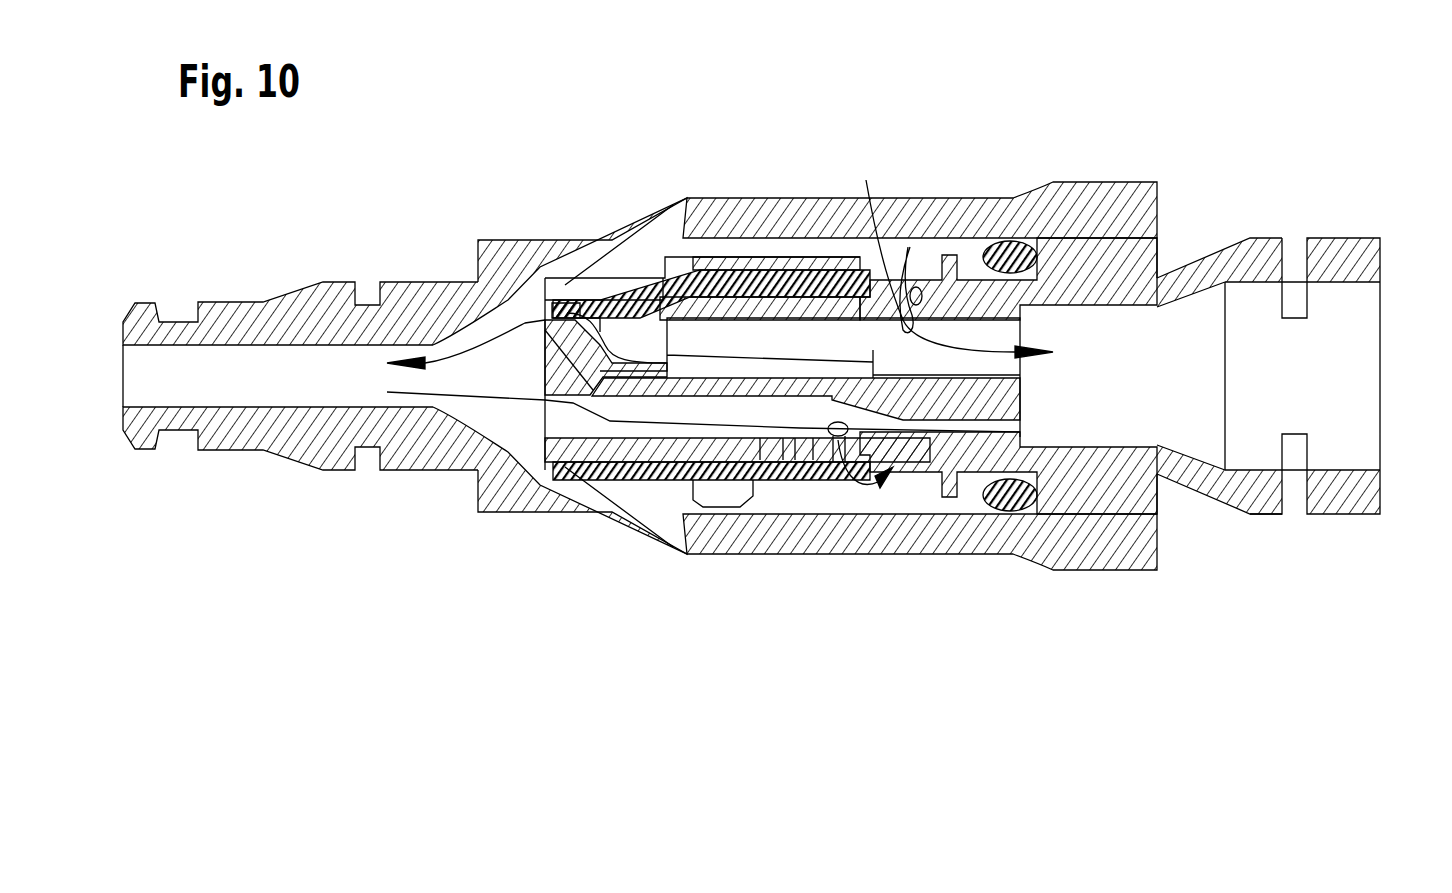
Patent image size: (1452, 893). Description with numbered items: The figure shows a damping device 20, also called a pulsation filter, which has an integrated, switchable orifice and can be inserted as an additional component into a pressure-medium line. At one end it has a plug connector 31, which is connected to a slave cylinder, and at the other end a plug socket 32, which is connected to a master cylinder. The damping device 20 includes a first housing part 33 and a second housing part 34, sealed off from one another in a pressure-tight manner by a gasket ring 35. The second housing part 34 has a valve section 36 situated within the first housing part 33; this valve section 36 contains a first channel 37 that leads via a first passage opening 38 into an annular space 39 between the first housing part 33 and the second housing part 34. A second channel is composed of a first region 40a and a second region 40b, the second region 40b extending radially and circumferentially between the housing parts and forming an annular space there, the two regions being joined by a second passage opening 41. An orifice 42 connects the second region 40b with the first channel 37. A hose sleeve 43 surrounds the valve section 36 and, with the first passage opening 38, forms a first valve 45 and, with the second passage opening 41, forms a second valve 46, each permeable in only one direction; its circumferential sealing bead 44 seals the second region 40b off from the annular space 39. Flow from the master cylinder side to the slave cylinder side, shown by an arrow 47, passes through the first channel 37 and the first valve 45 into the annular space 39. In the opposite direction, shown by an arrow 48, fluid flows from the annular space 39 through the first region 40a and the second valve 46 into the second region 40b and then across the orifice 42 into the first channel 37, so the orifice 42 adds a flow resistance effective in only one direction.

The damping device 20 is at (773, 572).
The plug connector 31 is at (163, 452).
The plug socket 32 is at (1350, 417).
The first housing part 33 is at (293, 308).
The second housing part 34 is at (1153, 266).
The gasket ring 35 is at (1013, 242).
The valve section 36 is at (566, 318).
The first channel 37 is at (767, 340).
The first passage opening 38 is at (622, 330).
The annular space 39 is at (512, 313).
The first region of second channel 40a is at (568, 425).
The second region of second channel 40b is at (920, 262).
The second passage opening 41 is at (880, 492).
The orifice 42 is at (882, 292).
The hose sleeve 43 is at (668, 423).
The circumferential sealing bead 44 is at (717, 485).
The first valve 45 is at (598, 325).
The second valve 46 is at (837, 440).
The arrow 47 is at (433, 360).
The arrow 48 is at (427, 405).